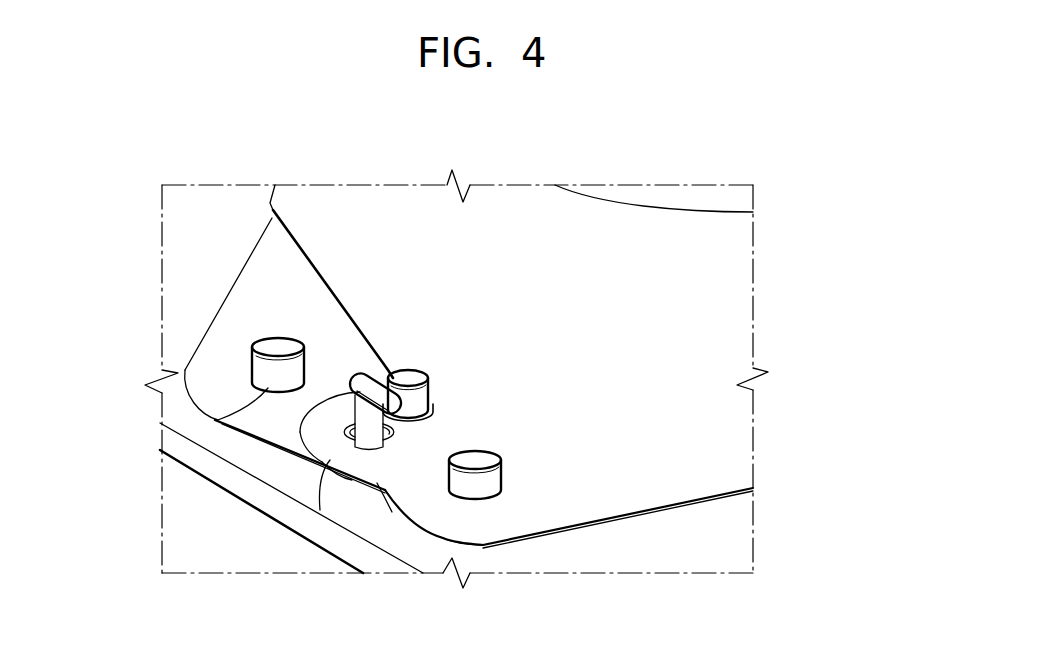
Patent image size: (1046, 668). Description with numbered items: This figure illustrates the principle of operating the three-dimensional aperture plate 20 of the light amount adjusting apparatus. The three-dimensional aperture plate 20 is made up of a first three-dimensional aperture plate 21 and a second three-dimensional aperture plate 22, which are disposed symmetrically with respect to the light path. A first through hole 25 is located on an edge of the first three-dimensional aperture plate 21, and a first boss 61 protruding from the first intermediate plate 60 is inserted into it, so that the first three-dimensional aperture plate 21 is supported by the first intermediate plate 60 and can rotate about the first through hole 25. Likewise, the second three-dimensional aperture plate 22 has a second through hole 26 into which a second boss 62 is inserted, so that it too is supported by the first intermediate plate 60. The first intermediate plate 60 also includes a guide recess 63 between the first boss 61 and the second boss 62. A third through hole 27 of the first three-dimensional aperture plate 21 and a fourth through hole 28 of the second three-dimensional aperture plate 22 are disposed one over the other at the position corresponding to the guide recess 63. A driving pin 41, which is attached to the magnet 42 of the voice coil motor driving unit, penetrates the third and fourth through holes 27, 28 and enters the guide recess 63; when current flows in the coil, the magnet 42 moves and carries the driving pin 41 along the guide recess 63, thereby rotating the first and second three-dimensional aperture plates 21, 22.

The 3D aperture plate 20 is at (247, 259).
The first 3D aperture plate 21 is at (238, 315).
The second 3D aperture plate 22 is at (602, 482).
The first through hole 25 is at (210, 418).
The second through hole 26 is at (495, 495).
The third through hole 27 is at (390, 438).
The fourth through hole 28 is at (390, 428).
The driving pin 41 is at (350, 398).
The magnet 42 is at (413, 375).
The first intermediate plate 60 is at (238, 487).
The first boss 61 is at (255, 362).
The second boss 62 is at (480, 493).
The guide recess 63 is at (327, 470).